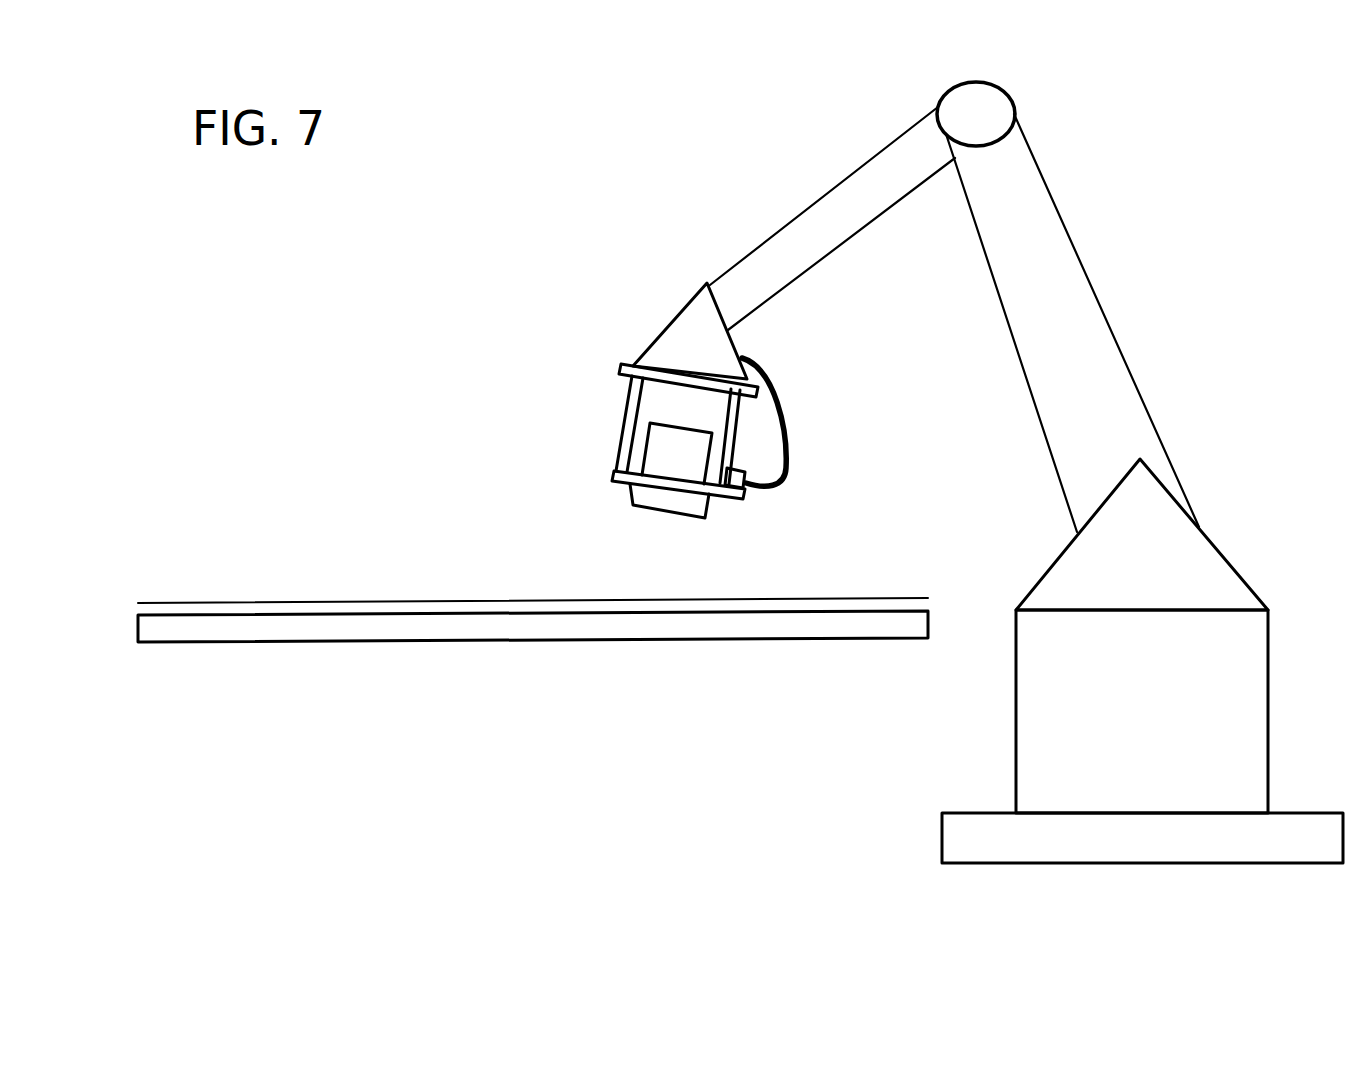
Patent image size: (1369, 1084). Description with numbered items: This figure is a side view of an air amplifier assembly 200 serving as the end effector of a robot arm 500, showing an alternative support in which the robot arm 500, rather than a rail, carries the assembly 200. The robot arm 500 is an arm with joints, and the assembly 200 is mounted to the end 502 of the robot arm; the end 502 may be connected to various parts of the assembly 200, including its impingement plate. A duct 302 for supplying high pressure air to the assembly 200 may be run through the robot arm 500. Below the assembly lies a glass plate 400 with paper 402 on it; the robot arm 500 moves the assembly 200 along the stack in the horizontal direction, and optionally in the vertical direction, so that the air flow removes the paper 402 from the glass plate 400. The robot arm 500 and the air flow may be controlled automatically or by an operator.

The robot arm 500 is at (1155, 258).
The end of the robot arm 502 is at (667, 328).
The air amplifier assembly 200 is at (606, 401).
The duct 302 is at (779, 386).
The glass plate 400 is at (136, 628).
The paper 402 is at (942, 599).